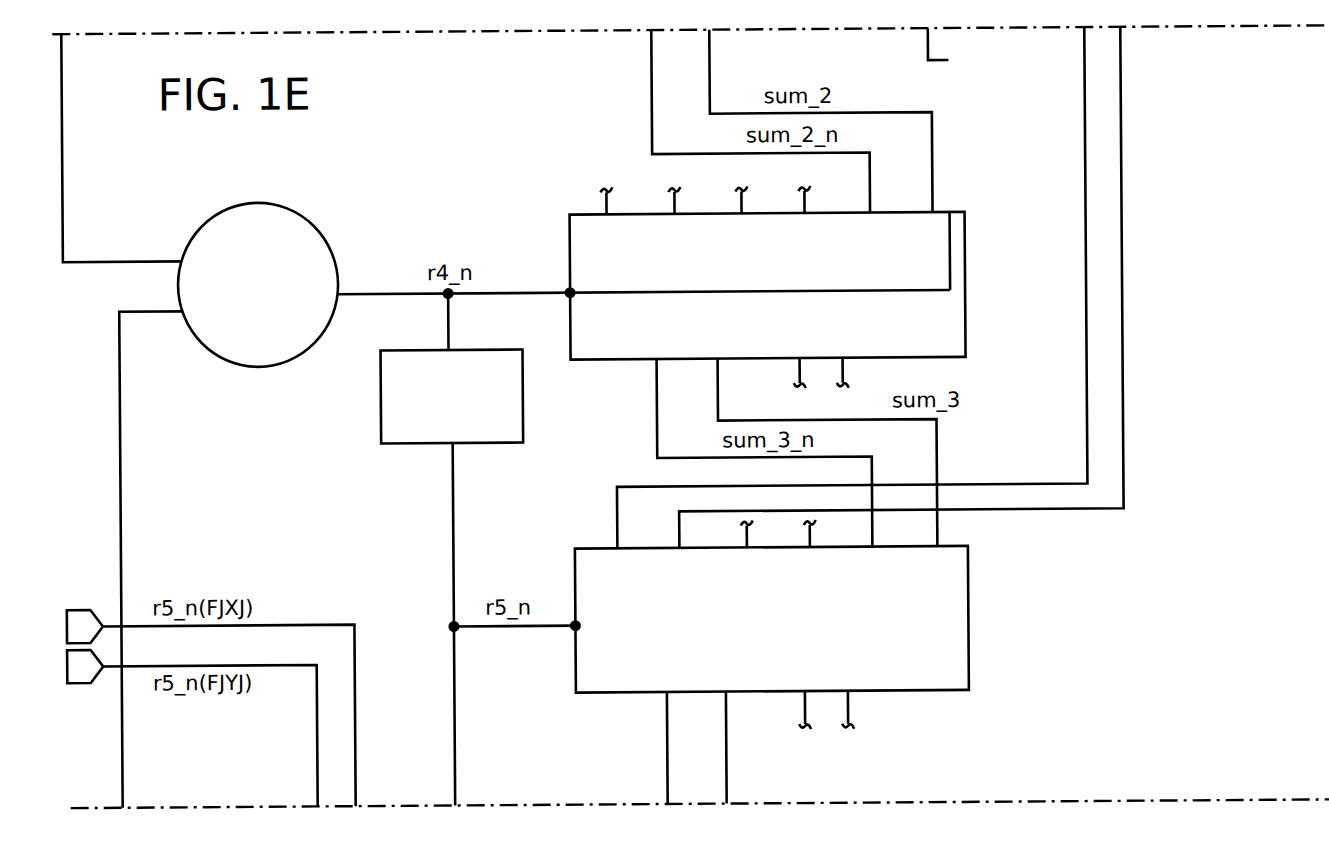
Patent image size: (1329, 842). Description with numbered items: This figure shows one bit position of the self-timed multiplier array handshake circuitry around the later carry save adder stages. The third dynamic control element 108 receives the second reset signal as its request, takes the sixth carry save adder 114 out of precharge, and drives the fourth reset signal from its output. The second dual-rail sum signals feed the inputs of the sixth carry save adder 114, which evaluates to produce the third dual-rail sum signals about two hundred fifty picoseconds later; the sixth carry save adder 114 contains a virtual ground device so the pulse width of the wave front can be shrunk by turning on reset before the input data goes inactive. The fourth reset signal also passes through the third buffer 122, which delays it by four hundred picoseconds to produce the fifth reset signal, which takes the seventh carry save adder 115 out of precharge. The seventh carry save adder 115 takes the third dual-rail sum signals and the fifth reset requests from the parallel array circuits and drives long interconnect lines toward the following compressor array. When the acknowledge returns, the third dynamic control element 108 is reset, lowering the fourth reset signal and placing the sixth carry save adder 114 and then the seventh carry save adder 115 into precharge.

The dynamic control element DCE_3 108 is at (301, 210).
The carry save adder CSA_6 114 is at (966, 234).
The carry save adder CSA_7 115 is at (967, 606).
The buffer B_3 122 is at (380, 411).